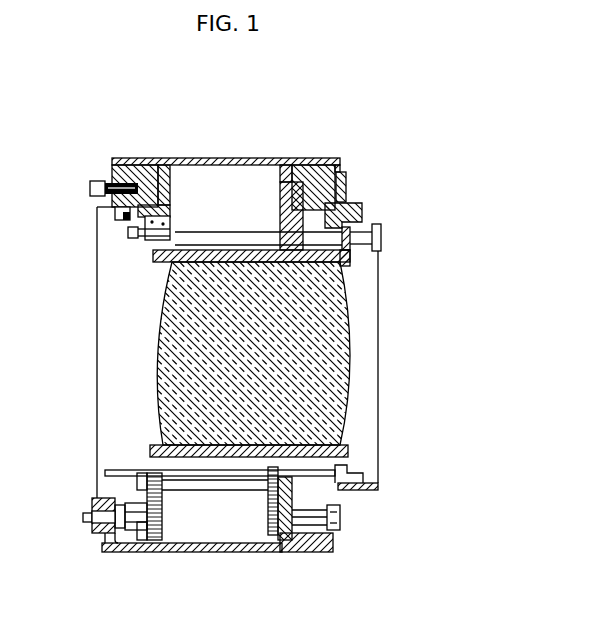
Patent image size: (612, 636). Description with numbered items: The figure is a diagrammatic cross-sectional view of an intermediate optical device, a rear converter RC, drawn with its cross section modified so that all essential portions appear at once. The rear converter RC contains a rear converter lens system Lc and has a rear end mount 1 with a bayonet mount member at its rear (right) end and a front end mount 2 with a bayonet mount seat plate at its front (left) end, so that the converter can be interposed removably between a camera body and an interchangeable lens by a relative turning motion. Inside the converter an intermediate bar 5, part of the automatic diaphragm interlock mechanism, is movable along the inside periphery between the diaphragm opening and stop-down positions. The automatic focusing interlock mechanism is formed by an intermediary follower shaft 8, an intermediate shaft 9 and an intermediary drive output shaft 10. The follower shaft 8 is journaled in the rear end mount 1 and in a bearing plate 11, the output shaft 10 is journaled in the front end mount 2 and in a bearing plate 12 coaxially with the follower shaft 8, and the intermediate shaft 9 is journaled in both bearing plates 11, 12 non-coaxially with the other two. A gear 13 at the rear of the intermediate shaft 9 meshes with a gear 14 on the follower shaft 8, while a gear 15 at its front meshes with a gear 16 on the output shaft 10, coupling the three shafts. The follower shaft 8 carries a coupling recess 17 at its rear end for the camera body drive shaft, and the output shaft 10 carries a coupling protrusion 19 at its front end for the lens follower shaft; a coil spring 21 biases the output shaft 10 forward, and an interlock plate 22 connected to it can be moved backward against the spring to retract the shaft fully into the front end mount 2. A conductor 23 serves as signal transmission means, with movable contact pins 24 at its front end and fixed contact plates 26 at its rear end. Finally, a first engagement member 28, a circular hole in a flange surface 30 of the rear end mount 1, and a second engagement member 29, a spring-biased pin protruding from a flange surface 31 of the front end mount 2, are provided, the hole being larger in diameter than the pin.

The rear end mount 1 is at (353, 208).
The front end mount 2 is at (97, 212).
The intermediate bar 5 is at (233, 470).
The intermediary follower shaft 8 is at (310, 520).
The intermediate shaft 9 is at (213, 491).
The intermediary drive output shaft 10 is at (133, 531).
The bearing plate 11 is at (270, 545).
The bearing plate 12 is at (150, 550).
The gear 13 is at (271, 497).
The gear 14 is at (272, 520).
The gear 15 is at (162, 497).
The gear 16 is at (160, 543).
The coupling recess 17 is at (342, 518).
The coupling protrusion 19 is at (84, 519).
The coil spring 21 is at (120, 503).
The interlock plate 22 is at (110, 548).
The conductor 23 is at (229, 233).
The movable contact pins 24 is at (130, 232).
The fixed contact plates 26 is at (379, 234).
The first engagement member 28 is at (348, 190).
The second engagement member 29 is at (90, 186).
The flange surface 30 is at (345, 177).
The flange surface 31 is at (110, 203).
The rear converter RC is at (300, 140).
The rear converter lens system Lc is at (259, 371).